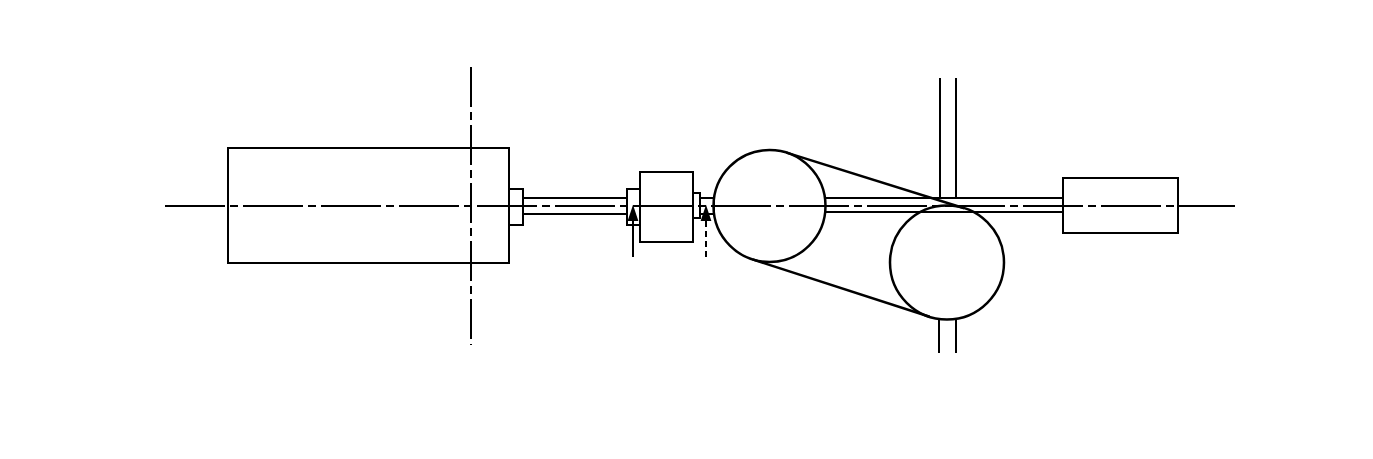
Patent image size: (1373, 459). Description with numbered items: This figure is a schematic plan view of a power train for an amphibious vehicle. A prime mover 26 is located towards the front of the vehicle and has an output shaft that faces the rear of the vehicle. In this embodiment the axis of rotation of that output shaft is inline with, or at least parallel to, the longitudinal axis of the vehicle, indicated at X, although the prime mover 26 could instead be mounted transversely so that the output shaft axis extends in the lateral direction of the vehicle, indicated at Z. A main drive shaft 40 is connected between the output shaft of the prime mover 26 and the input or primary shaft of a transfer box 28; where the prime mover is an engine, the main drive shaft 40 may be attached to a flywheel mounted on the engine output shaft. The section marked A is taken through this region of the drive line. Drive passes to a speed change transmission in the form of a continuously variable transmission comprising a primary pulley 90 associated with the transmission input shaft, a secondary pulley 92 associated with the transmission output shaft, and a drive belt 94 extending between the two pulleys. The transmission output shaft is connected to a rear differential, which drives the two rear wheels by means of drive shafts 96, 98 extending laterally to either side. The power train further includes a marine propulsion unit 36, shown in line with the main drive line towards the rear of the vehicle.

The prime mover 26 is at (285, 168).
The transfer box 28 is at (666, 180).
The marine propulsion unit 36 is at (1170, 192).
The main drive shaft 40 is at (567, 203).
The primary pulley 90 is at (765, 162).
The secondary pulley 92 is at (988, 268).
The drive belt 94 is at (860, 177).
The drive shaft 96 is at (952, 137).
The drive shaft 98 is at (1142, 316).
The longitudinal axis of the vehicle X is at (195, 206).
The lateral direction of the vehicle Z is at (472, 93).
The section plane A- A is at (670, 248).